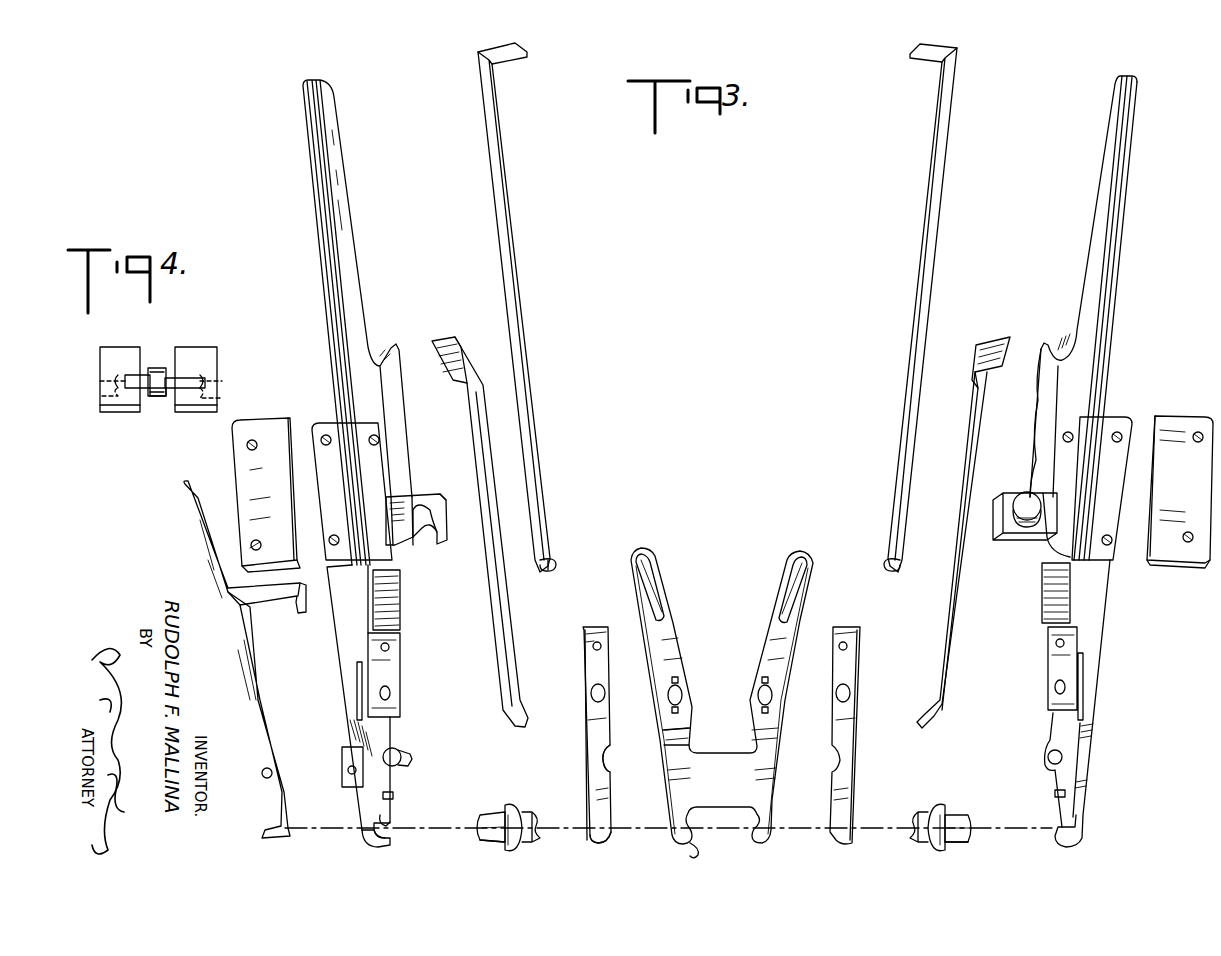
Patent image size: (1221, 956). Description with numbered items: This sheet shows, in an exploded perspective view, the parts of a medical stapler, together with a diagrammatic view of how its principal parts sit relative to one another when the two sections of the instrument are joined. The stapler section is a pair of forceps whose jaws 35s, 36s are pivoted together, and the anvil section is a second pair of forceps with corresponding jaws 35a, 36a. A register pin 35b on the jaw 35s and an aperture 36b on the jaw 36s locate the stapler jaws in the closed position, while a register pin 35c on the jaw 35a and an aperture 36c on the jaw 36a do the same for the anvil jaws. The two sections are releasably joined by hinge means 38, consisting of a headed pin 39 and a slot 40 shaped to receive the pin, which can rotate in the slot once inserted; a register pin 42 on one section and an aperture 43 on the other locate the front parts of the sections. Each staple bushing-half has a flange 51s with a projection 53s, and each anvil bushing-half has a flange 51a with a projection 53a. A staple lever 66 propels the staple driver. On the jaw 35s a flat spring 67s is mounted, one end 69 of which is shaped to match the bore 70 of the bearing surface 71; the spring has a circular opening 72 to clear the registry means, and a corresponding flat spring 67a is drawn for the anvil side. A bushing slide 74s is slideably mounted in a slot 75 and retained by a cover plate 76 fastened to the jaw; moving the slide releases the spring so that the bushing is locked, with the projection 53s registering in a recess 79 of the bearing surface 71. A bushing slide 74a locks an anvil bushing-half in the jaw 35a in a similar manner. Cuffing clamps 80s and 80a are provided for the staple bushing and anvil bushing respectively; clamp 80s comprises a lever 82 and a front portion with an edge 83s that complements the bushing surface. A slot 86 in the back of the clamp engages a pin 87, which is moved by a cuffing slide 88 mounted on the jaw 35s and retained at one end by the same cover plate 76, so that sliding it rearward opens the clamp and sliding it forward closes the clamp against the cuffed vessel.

In FIG. 3, the jaw 35s is at (388, 412).
In FIG. 4, the jaw 35s is at (124, 347).
In FIG. 3, the jaw 35a is at (1058, 402).
In FIG. 4, the jaw 35a is at (200, 347).
In FIG. 3, the jaw 36s is at (400, 440).
In FIG. 4, the jaw 36s is at (128, 412).
In FIG. 3, the jaw 36a is at (1024, 462).
In FIG. 4, the jaw 36a is at (206, 412).
In FIG. 3, the hinge means 38 is at (1020, 551).
In FIG. 4, the hinge means 38 is at (194, 372).
In FIG. 3, the headed pin 39 is at (1034, 498).
In FIG. 4, the headed pin 39 is at (158, 368).
In FIG. 3, the slot 40 is at (425, 540).
In FIG. 4, the slot 40 is at (158, 398).
In FIG. 3, the register pin 35b is at (396, 795).
In FIG. 4, the register pin 35b is at (100, 381).
In FIG. 3, the register pin 35c is at (1054, 796).
In FIG. 4, the register pin 35c is at (222, 381).
In FIG. 4, the aperture 36b is at (102, 397).
In FIG. 4, the aperture 36c is at (222, 398).
In FIG. 3, the register pin 42 is at (403, 752).
In FIG. 3, the aperture 43 is at (1048, 760).
In FIG. 3, the flange 51s is at (510, 846).
In FIG. 3, the flange 51a is at (944, 848).
In FIG. 3, the projection 53s is at (492, 812).
In FIG. 3, the projection 53a is at (946, 815).
In FIG. 3, the staple lever 66 is at (232, 646).
In FIG. 3, the flat spring 67s is at (584, 665).
In FIG. 3, the link plate 67a is at (855, 735).
In FIG. 3, the end of flat spring 69 is at (596, 840).
In FIG. 3, the bore 70 is at (390, 838).
In FIG. 3, the bearing surface 71 is at (388, 818).
In FIG. 3, the circular opening 72 is at (608, 760).
In FIG. 3, the bushing slide 74s is at (500, 596).
In FIG. 3, the bushing slide 74a is at (948, 610).
In FIG. 3, the slot 75 is at (357, 670).
In FIG. 3, the cover plate 76 is at (243, 462).
In FIG. 3, the recess 79 is at (366, 832).
In FIG. 3, the cuffing clamp 80s is at (690, 738).
In FIG. 3, the cuffing clamp 80a is at (757, 740).
In FIG. 3, the lever 82 is at (672, 622).
In FIG. 3, the edge 83s is at (696, 854).
In FIG. 3, the slot 86 is at (655, 574).
In FIG. 3, the pin 87 is at (558, 564).
In FIG. 3, the cuffing slide 88 is at (520, 328).